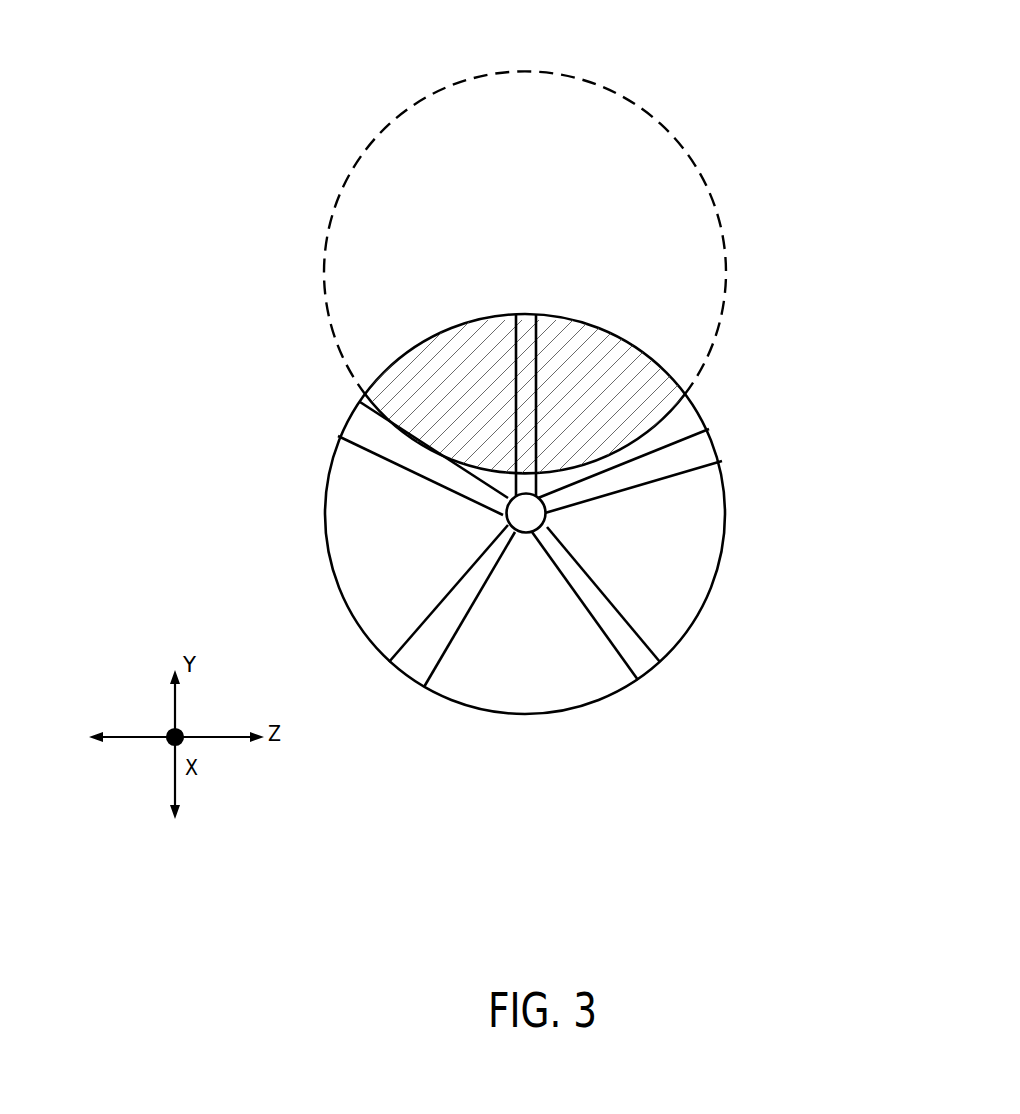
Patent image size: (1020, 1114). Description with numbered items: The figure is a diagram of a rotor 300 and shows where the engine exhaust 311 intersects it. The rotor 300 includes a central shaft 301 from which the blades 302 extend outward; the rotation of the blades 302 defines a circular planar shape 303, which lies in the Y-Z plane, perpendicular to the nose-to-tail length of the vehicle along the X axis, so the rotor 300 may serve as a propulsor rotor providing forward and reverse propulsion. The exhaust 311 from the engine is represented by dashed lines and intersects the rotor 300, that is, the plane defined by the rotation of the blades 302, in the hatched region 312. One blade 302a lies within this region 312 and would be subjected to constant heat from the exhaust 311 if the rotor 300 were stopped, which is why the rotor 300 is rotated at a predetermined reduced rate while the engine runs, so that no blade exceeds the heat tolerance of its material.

The rotor 300 is at (582, 684).
The shaft 301 is at (527, 523).
The blades 302 is at (642, 658).
The blade 302a is at (530, 332).
The circular planar shape 303 is at (718, 585).
The exhaust 311 is at (602, 85).
The region 312 is at (628, 383).